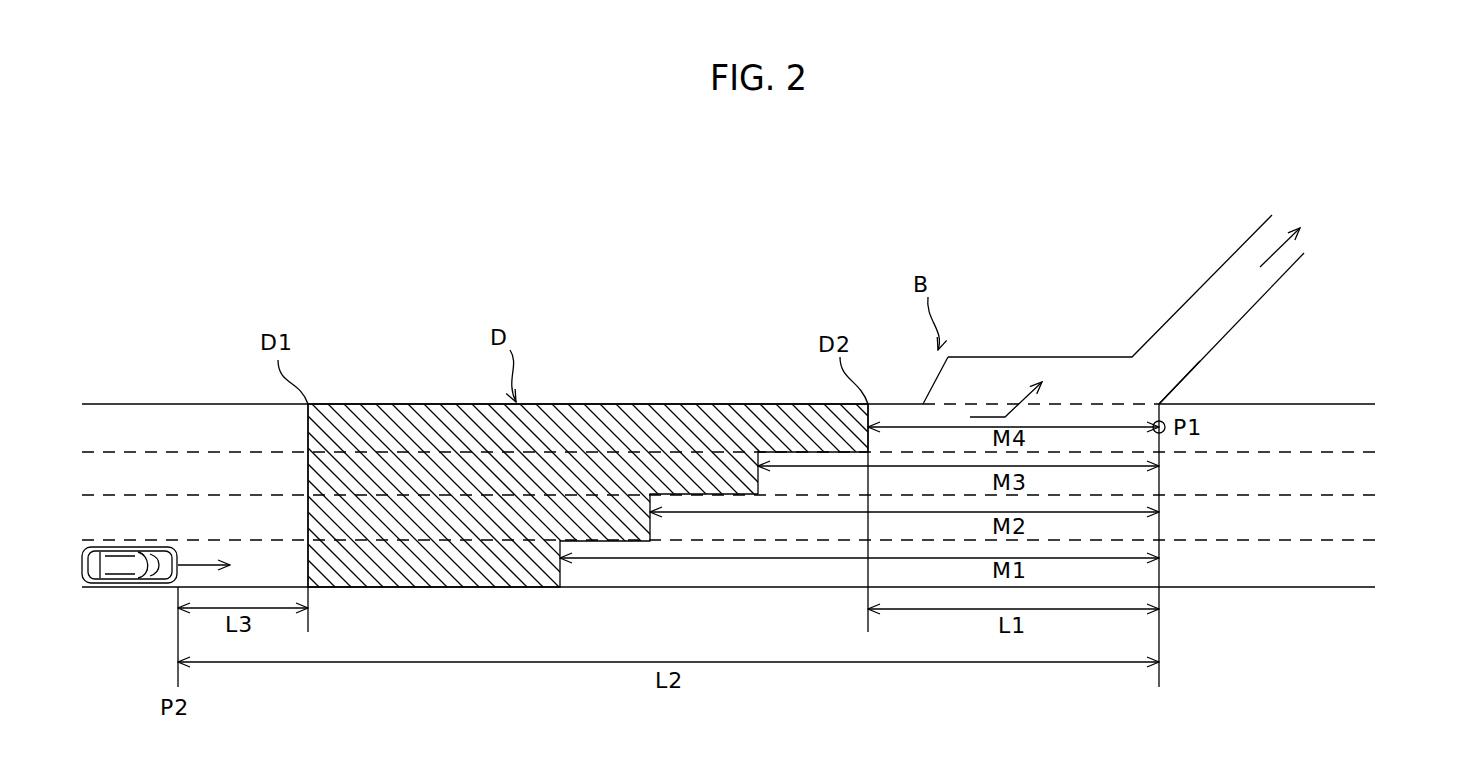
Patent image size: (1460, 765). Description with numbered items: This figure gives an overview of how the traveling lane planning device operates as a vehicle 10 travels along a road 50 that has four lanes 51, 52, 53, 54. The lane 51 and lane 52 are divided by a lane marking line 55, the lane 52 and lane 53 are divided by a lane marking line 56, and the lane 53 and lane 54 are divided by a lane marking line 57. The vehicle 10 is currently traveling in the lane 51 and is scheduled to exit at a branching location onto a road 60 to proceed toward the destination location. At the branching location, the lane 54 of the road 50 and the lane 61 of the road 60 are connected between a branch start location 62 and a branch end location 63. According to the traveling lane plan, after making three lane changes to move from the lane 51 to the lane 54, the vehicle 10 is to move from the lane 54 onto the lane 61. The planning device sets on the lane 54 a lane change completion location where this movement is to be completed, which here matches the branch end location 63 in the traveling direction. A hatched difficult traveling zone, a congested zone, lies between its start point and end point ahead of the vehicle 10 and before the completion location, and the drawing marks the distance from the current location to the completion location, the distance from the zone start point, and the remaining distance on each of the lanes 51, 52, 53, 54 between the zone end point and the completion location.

The vehicle 10 is at (128, 566).
The road 50 is at (1233, 604).
The lane 51 is at (1272, 574).
The lane 52 is at (1272, 530).
The lane 53 is at (1272, 485).
The lane 54 is at (1272, 440).
The lane marking line 55 is at (1292, 542).
The lane marking line 56 is at (1292, 497).
The lane marking line 57 is at (1292, 454).
The road 60 is at (1040, 354).
The lane 61 is at (1114, 396).
The branch start location 62 is at (923, 404).
The branch end location 63 is at (1166, 400).